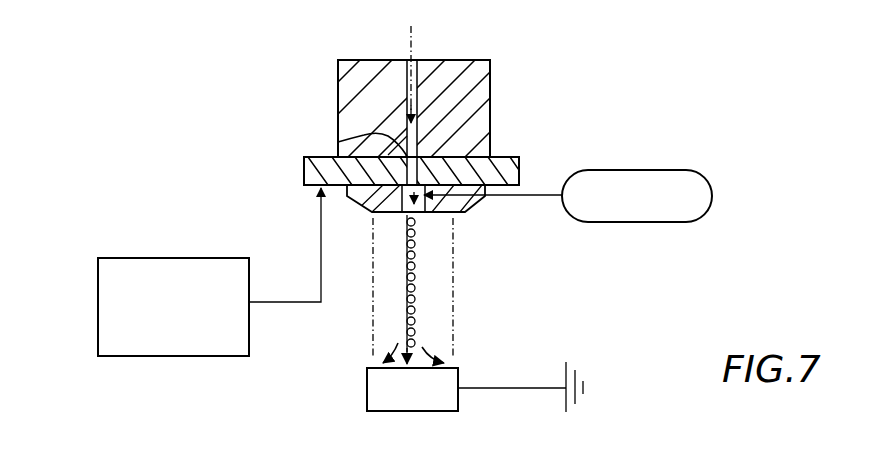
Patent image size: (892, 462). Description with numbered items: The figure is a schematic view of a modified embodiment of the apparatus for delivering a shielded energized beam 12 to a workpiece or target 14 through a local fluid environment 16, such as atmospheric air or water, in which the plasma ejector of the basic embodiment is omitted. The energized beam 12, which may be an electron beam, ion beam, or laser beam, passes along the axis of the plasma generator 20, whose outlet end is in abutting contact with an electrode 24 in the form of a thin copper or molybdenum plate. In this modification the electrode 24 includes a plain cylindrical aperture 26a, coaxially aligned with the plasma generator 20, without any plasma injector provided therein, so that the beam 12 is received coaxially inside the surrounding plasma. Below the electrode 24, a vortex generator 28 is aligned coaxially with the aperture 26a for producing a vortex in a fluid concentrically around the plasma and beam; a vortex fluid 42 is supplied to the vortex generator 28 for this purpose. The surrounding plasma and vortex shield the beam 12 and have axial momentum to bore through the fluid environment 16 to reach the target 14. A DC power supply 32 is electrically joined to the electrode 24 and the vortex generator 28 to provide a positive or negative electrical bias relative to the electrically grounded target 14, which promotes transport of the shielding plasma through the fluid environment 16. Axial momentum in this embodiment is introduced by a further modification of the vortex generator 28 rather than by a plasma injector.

The energized beam 12 is at (411, 25).
The plasma generator 20 is at (490, 76).
The plain cylindrical aperture 26a is at (338, 142).
The electrode 24 is at (535, 158).
The vortex generator 28 is at (467, 204).
The vortex fluid supply 42 is at (712, 185).
The DC power supply 32 is at (98, 285).
The fluid environment 16 is at (455, 320).
The target 14 is at (367, 395).